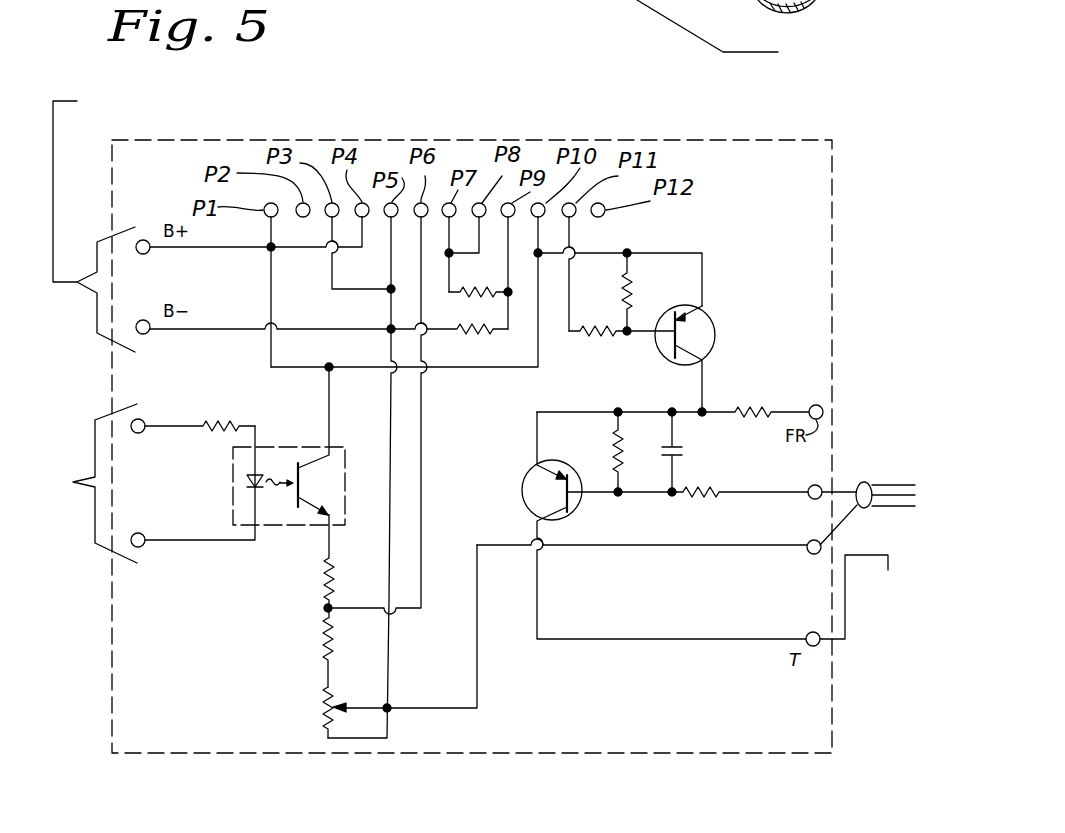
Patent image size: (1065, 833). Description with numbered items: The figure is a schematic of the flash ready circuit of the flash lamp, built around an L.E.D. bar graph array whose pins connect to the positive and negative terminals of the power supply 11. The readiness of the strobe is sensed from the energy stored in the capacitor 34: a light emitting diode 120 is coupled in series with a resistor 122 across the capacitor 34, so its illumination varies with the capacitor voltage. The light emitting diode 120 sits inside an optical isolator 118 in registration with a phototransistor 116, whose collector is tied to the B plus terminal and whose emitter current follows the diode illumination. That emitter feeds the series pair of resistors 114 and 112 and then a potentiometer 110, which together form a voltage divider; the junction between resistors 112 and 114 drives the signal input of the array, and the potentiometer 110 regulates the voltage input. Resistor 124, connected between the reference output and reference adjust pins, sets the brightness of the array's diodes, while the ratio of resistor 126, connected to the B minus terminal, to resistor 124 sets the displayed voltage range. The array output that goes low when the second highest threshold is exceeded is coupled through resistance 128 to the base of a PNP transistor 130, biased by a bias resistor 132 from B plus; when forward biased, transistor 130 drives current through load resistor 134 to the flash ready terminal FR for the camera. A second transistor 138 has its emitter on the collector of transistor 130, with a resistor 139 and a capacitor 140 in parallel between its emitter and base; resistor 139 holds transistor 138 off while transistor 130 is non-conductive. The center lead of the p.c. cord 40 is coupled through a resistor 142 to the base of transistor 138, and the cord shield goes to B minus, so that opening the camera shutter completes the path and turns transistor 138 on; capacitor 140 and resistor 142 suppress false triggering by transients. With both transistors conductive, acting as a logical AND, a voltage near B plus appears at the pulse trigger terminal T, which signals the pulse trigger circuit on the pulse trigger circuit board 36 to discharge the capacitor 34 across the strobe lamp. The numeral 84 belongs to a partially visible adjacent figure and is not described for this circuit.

The power supply 11 is at (185, 223).
The capacitor 34 is at (54, 747).
The pulse trigger circuit board 36 is at (881, 623).
The p.c. cord 40 is at (883, 482).
The element of adjacent figure 84 is at (817, 0).
The potentiometer 110 is at (327, 703).
The resistor 112 is at (325, 640).
The resistor 114 is at (327, 568).
The phototransistor 116 is at (290, 461).
The optical isolator 118 is at (254, 469).
The light emitting diode 120 is at (245, 479).
The resistor 122 is at (218, 418).
The resistor 124 is at (496, 287).
The resistor 126 is at (484, 336).
The resistor 128 is at (600, 341).
The PNP transistor 130 is at (716, 332).
The bias resistor 132 is at (634, 288).
The load resistor 134 is at (750, 405).
The transistor 138 is at (573, 513).
The resistor 139 is at (627, 453).
The capacitor 140 is at (679, 462).
The resistor 142 is at (693, 497).